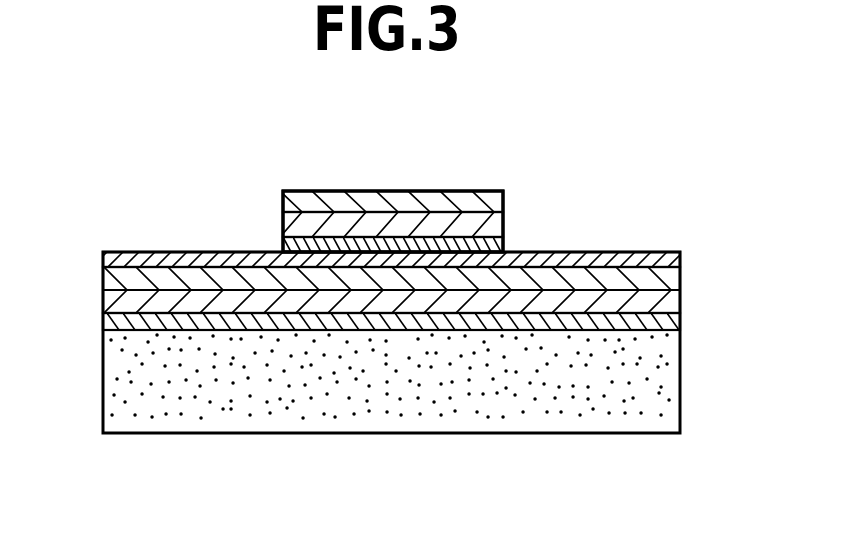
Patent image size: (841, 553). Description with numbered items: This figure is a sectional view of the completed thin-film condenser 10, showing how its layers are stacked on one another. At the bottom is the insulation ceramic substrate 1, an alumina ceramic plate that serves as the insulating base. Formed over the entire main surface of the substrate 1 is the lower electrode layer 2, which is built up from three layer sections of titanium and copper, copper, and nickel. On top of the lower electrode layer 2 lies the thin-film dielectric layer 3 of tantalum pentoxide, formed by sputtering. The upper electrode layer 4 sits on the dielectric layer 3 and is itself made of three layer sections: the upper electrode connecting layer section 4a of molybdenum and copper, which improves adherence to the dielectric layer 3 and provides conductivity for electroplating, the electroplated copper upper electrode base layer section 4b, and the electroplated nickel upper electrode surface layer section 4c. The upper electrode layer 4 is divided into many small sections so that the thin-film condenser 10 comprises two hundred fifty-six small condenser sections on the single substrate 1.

The thin-film condenser 10 is at (110, 157).
The insulation ceramic substrate 1 is at (667, 396).
The lower electrode layer 2 is at (98, 267).
The thin-film dielectric layer 3 is at (632, 252).
The upper electrode layer 4 is at (273, 190).
The upper electrode connecting layer section 4a is at (505, 247).
The upper electrode base layer section 4b is at (475, 223).
The upper electrode surface layer section 4c is at (365, 200).